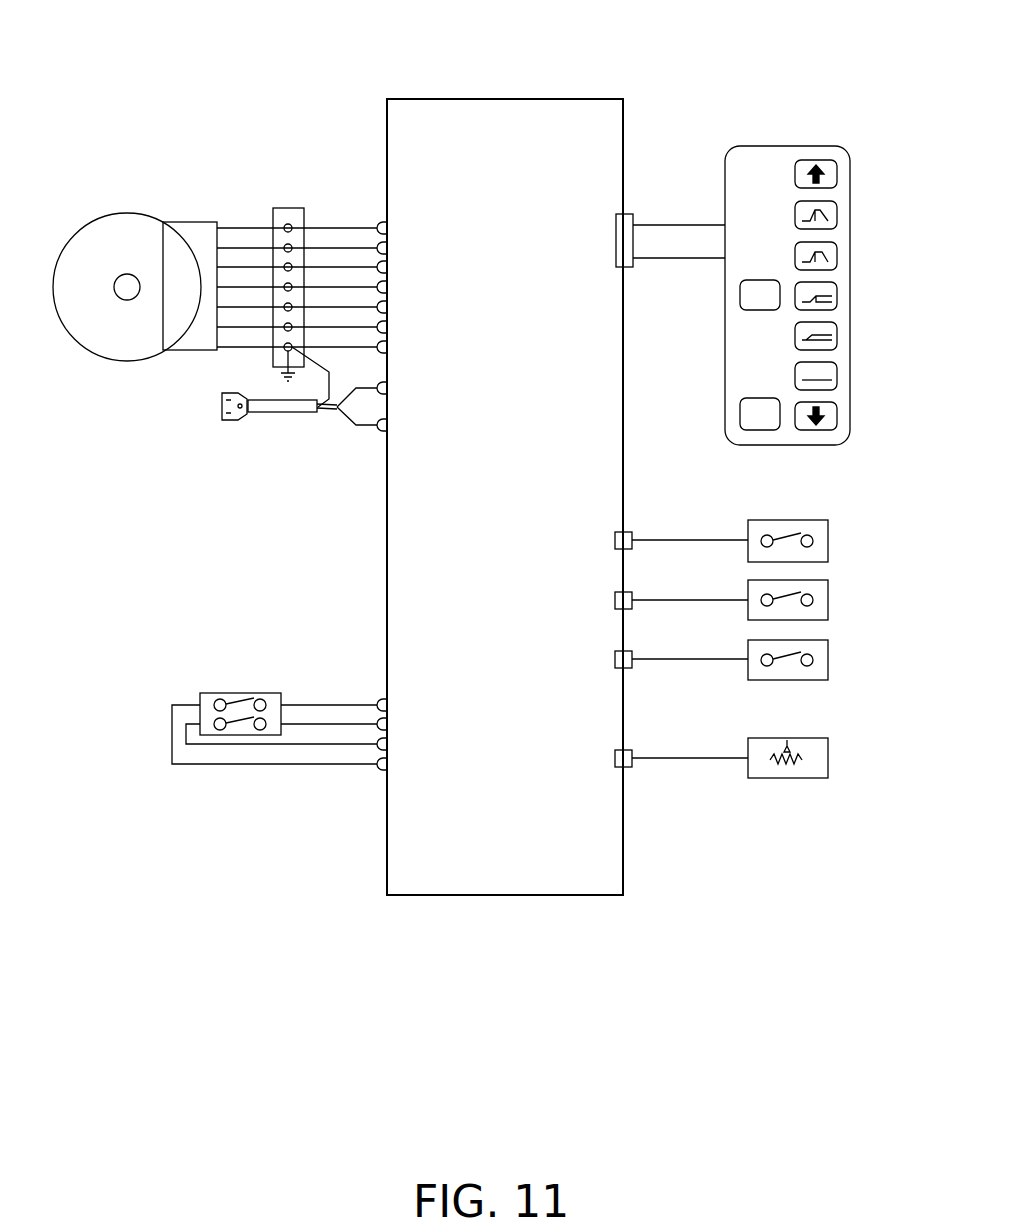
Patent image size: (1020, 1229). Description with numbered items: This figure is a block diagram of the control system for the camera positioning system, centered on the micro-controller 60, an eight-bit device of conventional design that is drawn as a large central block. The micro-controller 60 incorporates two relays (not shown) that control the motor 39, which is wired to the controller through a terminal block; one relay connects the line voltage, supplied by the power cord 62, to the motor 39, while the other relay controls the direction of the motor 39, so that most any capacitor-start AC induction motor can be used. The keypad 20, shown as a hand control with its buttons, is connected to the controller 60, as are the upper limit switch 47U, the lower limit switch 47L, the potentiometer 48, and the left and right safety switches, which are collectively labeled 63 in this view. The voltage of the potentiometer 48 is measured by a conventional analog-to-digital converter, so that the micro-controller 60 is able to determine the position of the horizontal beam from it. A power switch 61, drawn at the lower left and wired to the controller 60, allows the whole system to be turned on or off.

The micro-controller 60 is at (431, 117).
The keypad 20 is at (758, 157).
The motor 39 is at (157, 238).
The safety switches 63 is at (292, 217).
The power cord 62 is at (222, 417).
The power switch 61 is at (272, 700).
The upper limit switch 47U is at (822, 531).
The lower limit switch 47L is at (822, 590).
The potentiometer 48 is at (822, 748).